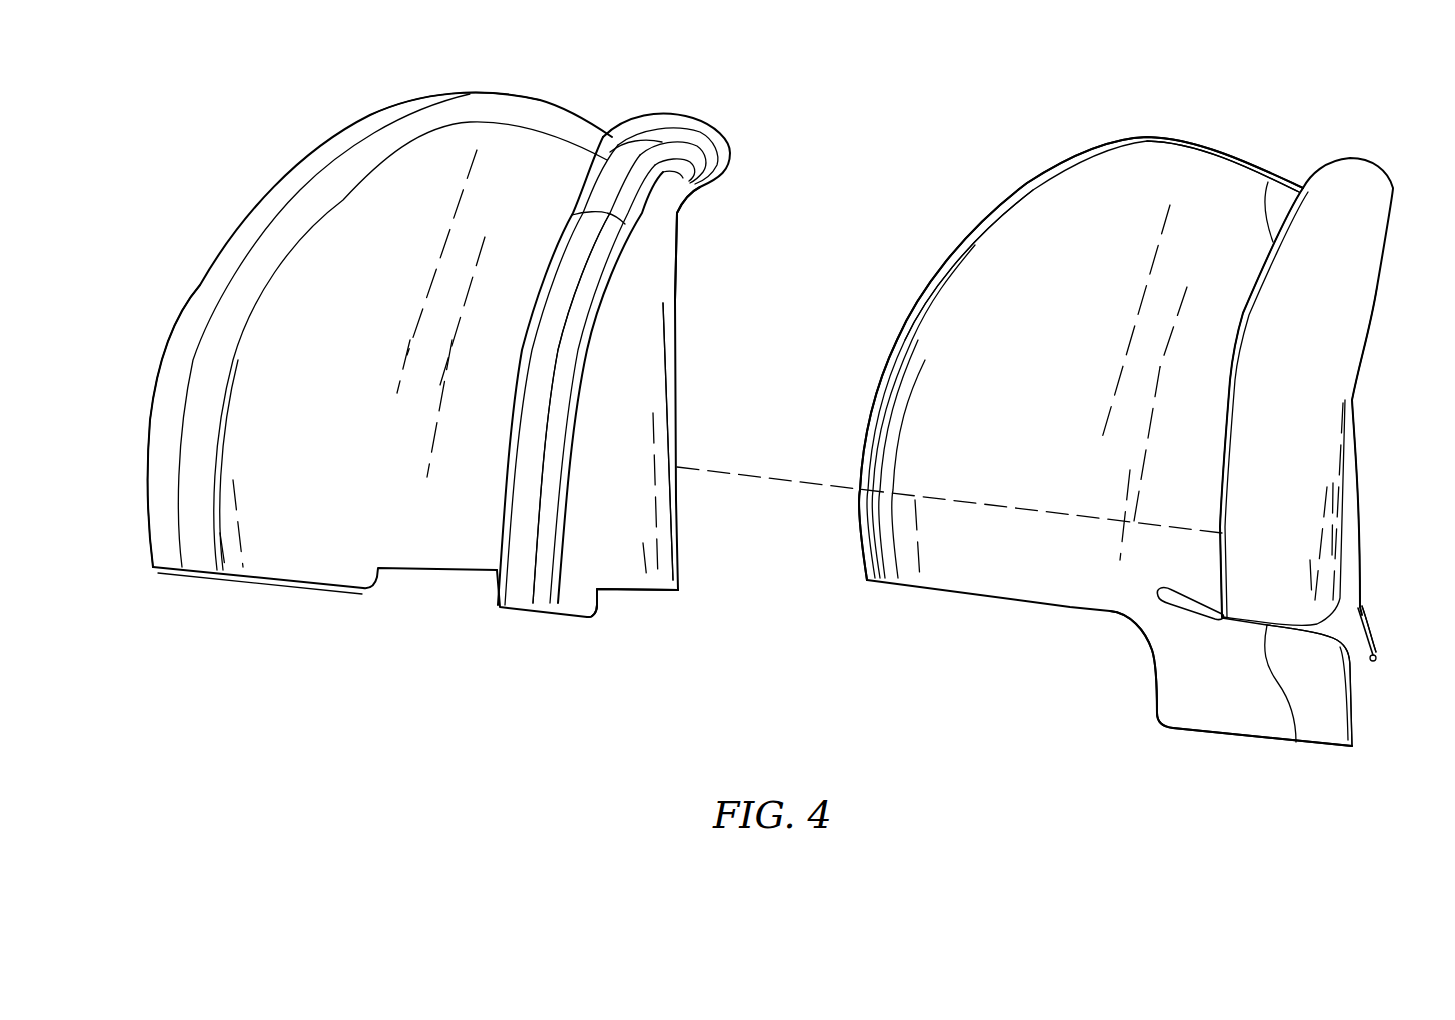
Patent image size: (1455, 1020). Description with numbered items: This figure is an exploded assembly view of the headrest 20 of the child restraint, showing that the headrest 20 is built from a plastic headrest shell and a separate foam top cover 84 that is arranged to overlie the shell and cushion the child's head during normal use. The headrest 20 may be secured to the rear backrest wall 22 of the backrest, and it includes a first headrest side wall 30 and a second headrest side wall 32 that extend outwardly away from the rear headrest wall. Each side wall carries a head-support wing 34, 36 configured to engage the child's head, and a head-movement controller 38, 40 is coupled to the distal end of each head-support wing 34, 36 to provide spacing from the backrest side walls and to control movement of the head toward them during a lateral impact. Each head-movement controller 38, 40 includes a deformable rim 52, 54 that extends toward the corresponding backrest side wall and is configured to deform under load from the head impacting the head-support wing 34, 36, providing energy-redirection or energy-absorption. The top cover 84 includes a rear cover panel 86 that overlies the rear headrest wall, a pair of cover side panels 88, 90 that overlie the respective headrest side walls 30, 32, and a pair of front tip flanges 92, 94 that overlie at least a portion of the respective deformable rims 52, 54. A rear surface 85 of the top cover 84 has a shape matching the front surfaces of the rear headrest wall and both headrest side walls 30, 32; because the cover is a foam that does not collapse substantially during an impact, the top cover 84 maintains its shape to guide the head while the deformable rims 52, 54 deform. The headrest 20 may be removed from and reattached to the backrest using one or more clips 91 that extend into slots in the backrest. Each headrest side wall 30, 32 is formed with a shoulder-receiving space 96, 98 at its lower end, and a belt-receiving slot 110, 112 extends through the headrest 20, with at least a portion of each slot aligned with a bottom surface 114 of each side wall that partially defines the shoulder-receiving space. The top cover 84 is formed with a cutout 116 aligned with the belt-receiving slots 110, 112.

The headrest 20 is at (900, 82).
The rear backrest wall 22 is at (1355, 456).
The first headrest side wall 30 is at (1028, 183).
The second headrest side wall 32 is at (1364, 158).
The head-support wing 34 is at (1118, 173).
The head-support wing 36 is at (1268, 182).
The head-movement controller 38 is at (947, 257).
The head-movement controller 40 is at (1347, 305).
The deformable rim 52 is at (886, 362).
The deformable rim 54 is at (1312, 370).
The top cover 84 is at (572, 86).
The rear surface 85 is at (648, 355).
The rear cover panel 86 is at (672, 323).
The cover side panel 88 is at (422, 197).
The cover side panel 90 is at (638, 255).
The clip 91 is at (1375, 640).
The front tip flange 92 is at (183, 345).
The front tip flange 94 is at (597, 265).
The shoulder-receiving space 96 is at (1098, 665).
The shoulder-receiving space 98 is at (1328, 673).
The belt-receiving slot 110 is at (1196, 622).
The belt-receiving slot 112 is at (1367, 620).
The bottom surface 114 is at (1067, 608).
The cutout 116 is at (634, 603).